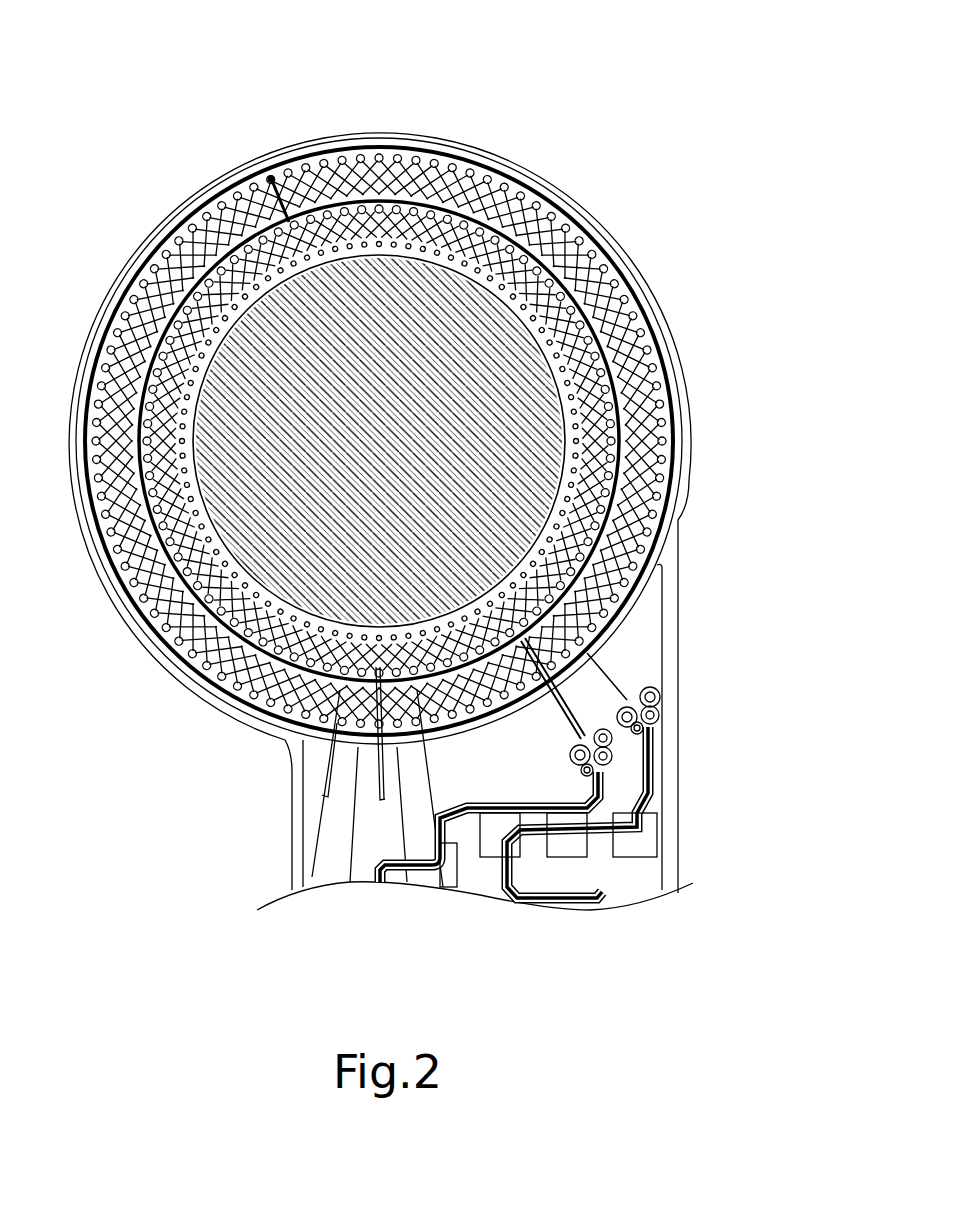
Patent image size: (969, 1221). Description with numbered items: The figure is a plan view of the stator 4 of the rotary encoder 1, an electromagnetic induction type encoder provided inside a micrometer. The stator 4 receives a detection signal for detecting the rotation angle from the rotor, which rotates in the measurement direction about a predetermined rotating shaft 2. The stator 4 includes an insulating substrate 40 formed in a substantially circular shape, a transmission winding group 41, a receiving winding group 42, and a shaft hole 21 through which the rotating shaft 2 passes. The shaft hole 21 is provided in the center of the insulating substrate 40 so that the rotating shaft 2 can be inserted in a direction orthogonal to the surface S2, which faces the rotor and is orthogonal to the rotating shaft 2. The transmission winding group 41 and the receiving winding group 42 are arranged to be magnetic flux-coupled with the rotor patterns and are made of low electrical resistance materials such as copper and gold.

The rotary encoder 1 is at (732, 102).
The rotating shaft 2 is at (237, 424).
The stator 4 is at (165, 97).
The shaft hole 21 is at (645, 303).
The insulating substrate 40 is at (690, 468).
The transmission winding group 41 is at (516, 190).
The receiving winding group 42 is at (602, 243).
The surface S2 is at (680, 387).